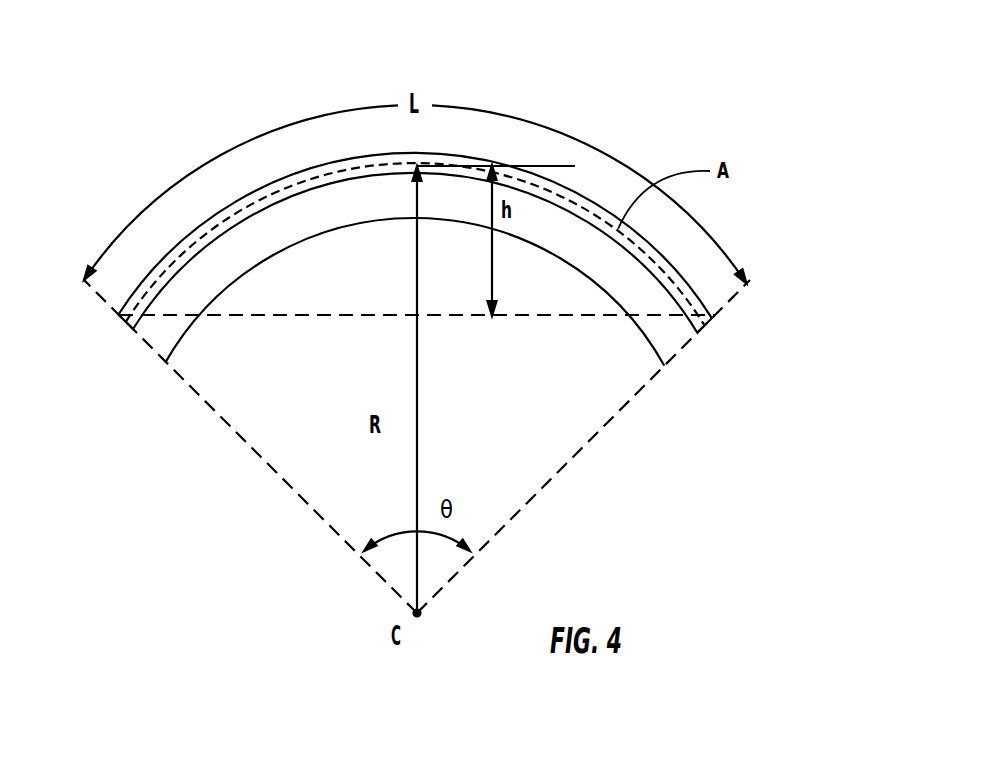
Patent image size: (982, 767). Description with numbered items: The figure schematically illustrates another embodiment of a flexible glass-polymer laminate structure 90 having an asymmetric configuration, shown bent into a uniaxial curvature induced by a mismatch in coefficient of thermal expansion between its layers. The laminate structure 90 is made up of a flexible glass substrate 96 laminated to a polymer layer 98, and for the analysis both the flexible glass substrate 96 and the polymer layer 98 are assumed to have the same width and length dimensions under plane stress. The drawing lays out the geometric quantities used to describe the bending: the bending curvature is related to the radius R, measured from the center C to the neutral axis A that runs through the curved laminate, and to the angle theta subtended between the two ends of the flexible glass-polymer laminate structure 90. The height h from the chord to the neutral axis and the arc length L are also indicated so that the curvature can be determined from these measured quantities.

The flexible glass-polymer laminate structure 90 is at (652, 52).
The flexible glass substrate 96 is at (243, 193).
The polymer layer 98 is at (217, 263).